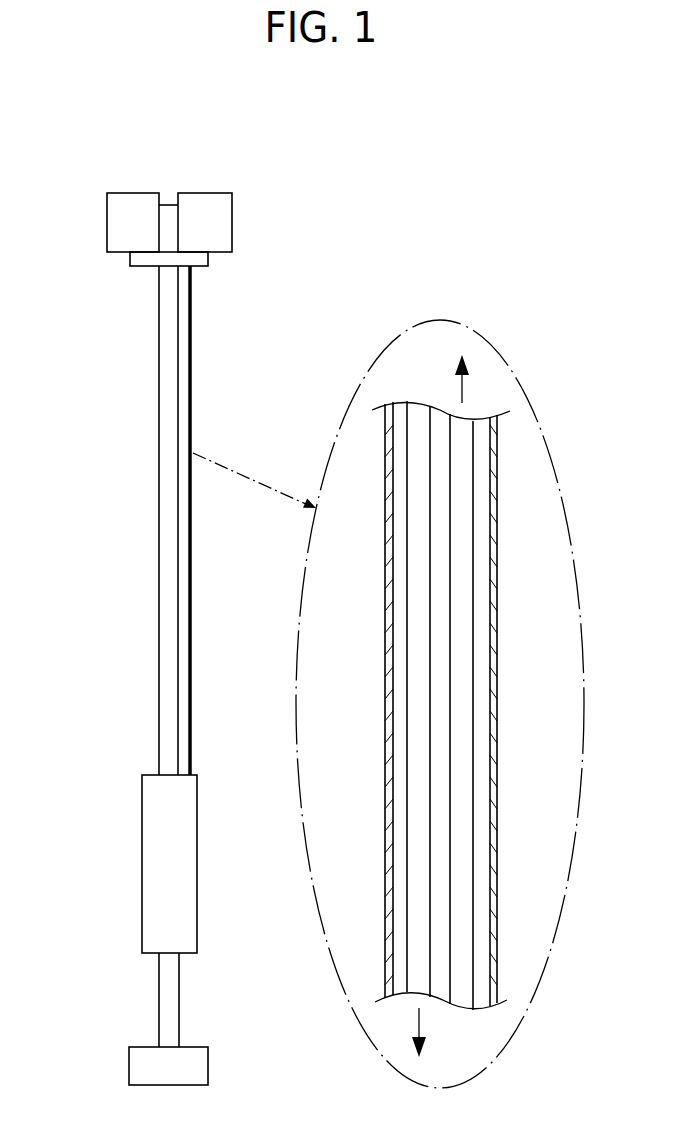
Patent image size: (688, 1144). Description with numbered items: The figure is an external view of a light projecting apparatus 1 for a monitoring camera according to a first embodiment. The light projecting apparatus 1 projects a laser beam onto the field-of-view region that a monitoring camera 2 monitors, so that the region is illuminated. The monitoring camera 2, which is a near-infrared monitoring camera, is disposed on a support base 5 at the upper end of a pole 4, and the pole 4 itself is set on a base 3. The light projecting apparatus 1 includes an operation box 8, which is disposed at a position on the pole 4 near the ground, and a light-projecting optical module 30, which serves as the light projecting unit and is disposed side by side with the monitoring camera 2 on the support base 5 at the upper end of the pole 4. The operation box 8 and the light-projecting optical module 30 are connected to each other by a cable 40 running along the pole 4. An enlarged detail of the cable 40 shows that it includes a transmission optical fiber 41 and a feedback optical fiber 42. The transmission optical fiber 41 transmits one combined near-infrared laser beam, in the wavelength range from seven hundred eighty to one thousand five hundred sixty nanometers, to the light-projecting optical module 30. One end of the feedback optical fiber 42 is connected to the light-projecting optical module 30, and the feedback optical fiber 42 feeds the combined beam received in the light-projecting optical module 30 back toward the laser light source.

The light projecting apparatus 1 is at (243, 208).
The monitoring camera 2 is at (108, 222).
The light-projecting optical module 30 is at (222, 232).
The support base 5 is at (142, 262).
The pole 4 is at (160, 595).
The cable 40 is at (194, 595).
The transmission optical fiber 41 is at (465, 710).
The feedback optical fiber 42 is at (412, 718).
The operation box 8 is at (147, 858).
The base 3 is at (130, 1065).